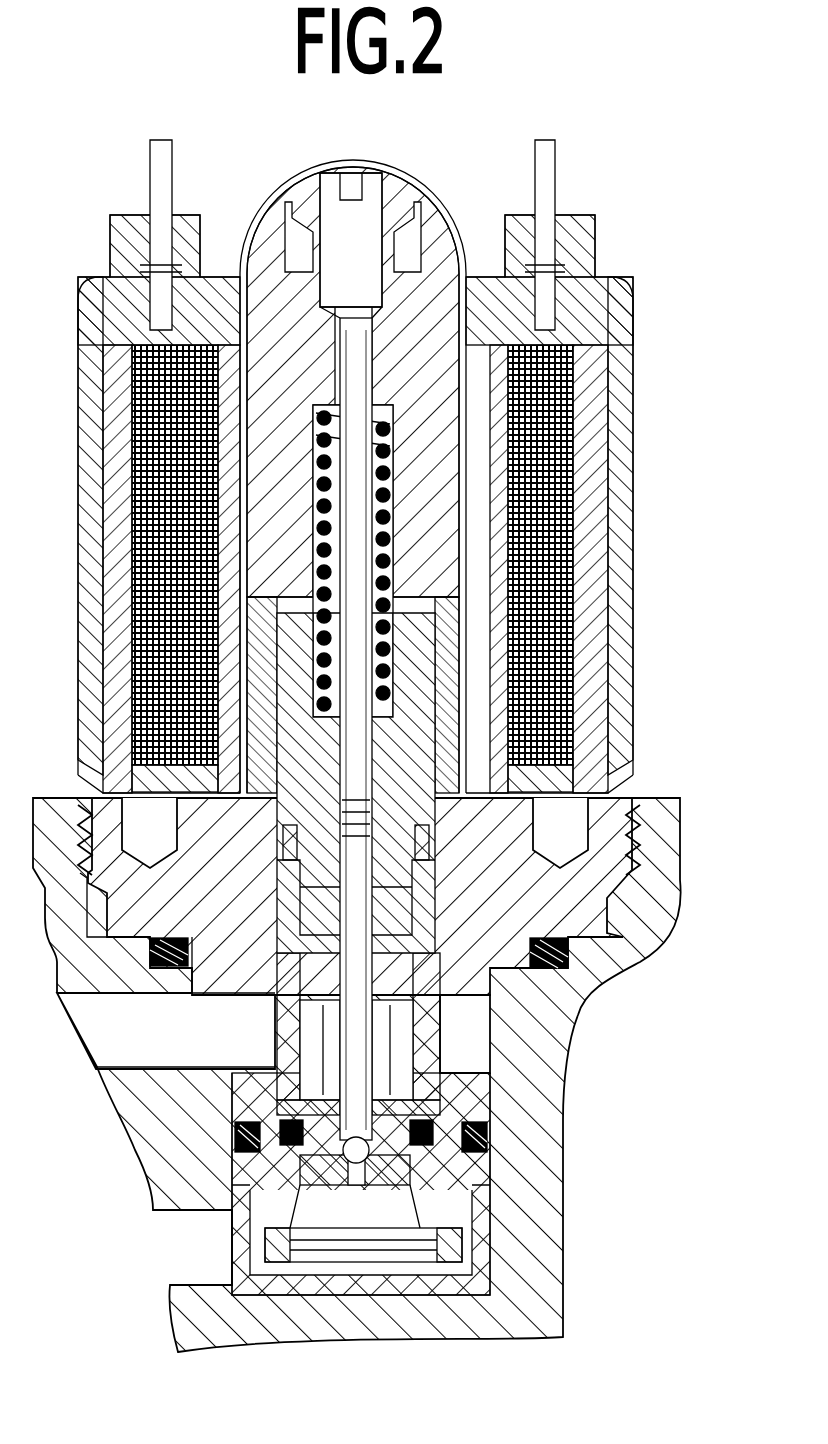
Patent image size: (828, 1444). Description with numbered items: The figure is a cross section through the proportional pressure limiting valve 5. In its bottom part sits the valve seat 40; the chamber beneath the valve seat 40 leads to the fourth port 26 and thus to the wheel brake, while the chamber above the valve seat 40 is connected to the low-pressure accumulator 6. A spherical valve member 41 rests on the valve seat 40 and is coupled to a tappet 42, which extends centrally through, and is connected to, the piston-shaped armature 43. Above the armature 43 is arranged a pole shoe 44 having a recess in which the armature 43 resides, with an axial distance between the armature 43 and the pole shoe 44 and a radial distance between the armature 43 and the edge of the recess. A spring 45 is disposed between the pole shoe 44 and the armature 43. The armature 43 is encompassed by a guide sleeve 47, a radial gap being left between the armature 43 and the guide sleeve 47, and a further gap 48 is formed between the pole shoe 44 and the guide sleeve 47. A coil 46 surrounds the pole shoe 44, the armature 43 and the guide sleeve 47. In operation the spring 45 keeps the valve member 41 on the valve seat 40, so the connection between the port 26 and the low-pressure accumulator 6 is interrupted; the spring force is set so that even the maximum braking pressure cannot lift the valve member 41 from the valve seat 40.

The valve housing 5 is at (690, 852).
The low-pressure accumulator 6 is at (108, 1032).
The fourth port 26 is at (215, 1250).
The valve seat 40 is at (330, 1181).
The spherical valve member 41 is at (300, 1167).
The tappet 42 is at (370, 1042).
The armature 43 is at (440, 895).
The pole shoe 44 is at (440, 455).
The spring 45 is at (398, 527).
The coil 46 is at (575, 400).
The guide sleeve 47 is at (490, 720).
The gap 48 is at (490, 637).